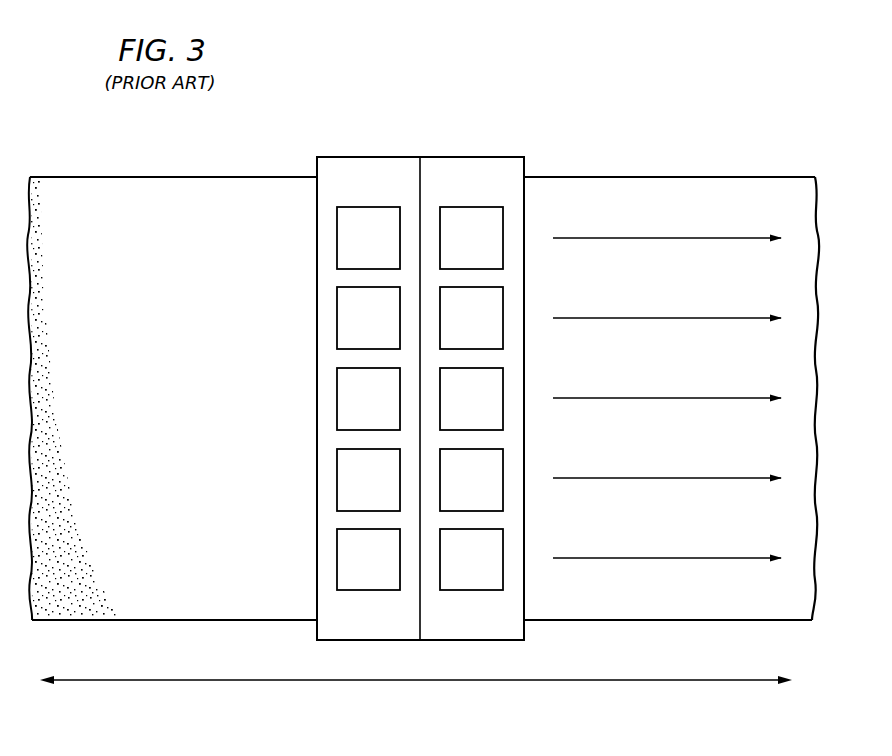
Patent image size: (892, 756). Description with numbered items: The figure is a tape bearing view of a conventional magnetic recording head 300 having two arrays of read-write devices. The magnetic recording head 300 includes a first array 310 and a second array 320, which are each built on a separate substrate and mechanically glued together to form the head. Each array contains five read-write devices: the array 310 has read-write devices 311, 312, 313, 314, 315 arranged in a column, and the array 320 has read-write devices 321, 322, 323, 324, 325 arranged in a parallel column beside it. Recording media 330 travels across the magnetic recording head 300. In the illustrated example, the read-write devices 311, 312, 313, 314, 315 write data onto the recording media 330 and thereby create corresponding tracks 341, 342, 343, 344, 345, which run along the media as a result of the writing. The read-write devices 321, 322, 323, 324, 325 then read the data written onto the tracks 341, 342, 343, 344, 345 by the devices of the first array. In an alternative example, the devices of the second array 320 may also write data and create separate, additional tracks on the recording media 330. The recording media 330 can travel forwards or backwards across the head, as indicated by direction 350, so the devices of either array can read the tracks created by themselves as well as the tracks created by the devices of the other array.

The magnetic recording head 300 is at (312, 94).
The array 310 is at (368, 156).
The array 320 is at (473, 156).
The read-write device 311 is at (386, 249).
The read-write device 312 is at (386, 329).
The read-write device 313 is at (386, 410).
The read-write device 314 is at (386, 491).
The read-write device 315 is at (386, 571).
The read-write device 321 is at (490, 249).
The read-write device 322 is at (490, 329).
The read-write device 323 is at (490, 410).
The read-write device 324 is at (490, 491).
The read-write device 325 is at (490, 571).
The recording media 330 is at (166, 439).
The track 341 is at (597, 240).
The track 342 is at (735, 316).
The track 343 is at (735, 396).
The track 344 is at (735, 476).
The track 345 is at (735, 556).
The direction 350 is at (151, 679).